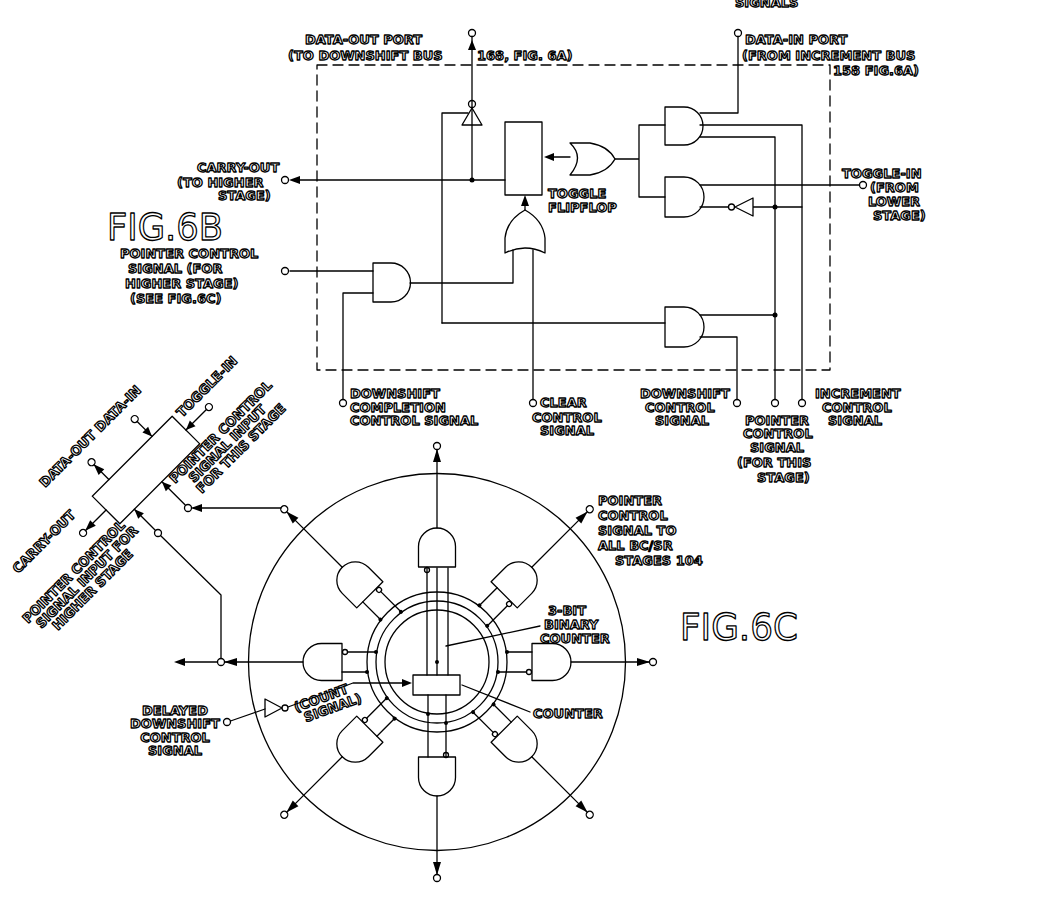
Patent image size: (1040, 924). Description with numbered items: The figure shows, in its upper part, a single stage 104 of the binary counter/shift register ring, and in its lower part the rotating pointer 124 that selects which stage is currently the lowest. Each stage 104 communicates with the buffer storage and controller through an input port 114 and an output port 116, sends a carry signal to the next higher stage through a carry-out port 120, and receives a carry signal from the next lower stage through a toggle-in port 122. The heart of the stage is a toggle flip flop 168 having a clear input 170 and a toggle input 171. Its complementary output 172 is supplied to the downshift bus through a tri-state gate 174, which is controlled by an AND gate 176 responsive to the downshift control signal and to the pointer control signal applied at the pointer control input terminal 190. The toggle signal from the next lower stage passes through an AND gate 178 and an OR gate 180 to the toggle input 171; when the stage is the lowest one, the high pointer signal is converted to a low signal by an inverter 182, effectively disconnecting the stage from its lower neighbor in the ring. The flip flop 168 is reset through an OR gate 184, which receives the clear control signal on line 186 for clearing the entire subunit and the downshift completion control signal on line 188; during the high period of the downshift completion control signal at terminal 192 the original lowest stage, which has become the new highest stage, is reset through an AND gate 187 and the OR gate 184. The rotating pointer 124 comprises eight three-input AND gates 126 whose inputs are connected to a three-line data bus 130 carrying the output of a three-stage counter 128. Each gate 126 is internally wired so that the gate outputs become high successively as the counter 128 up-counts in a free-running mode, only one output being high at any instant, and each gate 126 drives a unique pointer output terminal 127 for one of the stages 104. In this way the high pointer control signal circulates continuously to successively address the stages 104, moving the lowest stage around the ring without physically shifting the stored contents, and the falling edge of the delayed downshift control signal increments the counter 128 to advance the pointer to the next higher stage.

In FIG. 6B, the BC/SR stage 104 is at (633, 62).
In FIG. 6C, the BC/SR stage 104 is at (93, 493).
In FIG. 6B, the input port 114 is at (734, 32).
In FIG. 6C, the input port 114 is at (152, 411).
In FIG. 6B, the output port 116 is at (476, 31).
In FIG. 6C, the output port 116 is at (111, 455).
In FIG. 6B, the carry-out port 120 is at (308, 176).
In FIG. 6C, the carry-out port 120 is at (88, 534).
In FIG. 6B, the toggle-in port 122 is at (863, 190).
In FIG. 6C, the toggle-in port 122 is at (218, 405).
In FIG. 6C, the rotating pointer 124 is at (637, 729).
In FIG. 6C, the three-input AND gate 126 is at (566, 673).
In FIG. 6C, the pointer output terminal 127 is at (660, 668).
In FIG. 6C, the three-stage counter 128 is at (454, 697).
In FIG. 6C, the three-line data bus 130 is at (504, 694).
In FIG. 6B, the toggle flip flop 168 is at (523, 124).
In FIG. 6B, the clear input 170 is at (532, 211).
In FIG. 6B, the toggle input 171 is at (548, 152).
In FIG. 6B, the Q-bar output 172 is at (500, 185).
In FIG. 6B, the tri-state gate 174 is at (478, 110).
In FIG. 6B, the AND gate 176 is at (692, 310).
In FIG. 6B, the AND gate 178 is at (687, 217).
In FIG. 6B, the OR gate 180 is at (598, 150).
In FIG. 6B, the inverter 182 is at (745, 214).
In FIG. 6B, the OR gate 184 is at (547, 246).
In FIG. 6B, the clear control signal line 186 is at (537, 350).
In FIG. 6B, the AND gate 187 is at (390, 270).
In FIG. 6B, the downshift completion control signal line 188 is at (478, 285).
In FIG. 6B, the pointer control input terminal 190 is at (770, 406).
In FIG. 6B, the downshift completion control signal terminal 192 is at (340, 394).